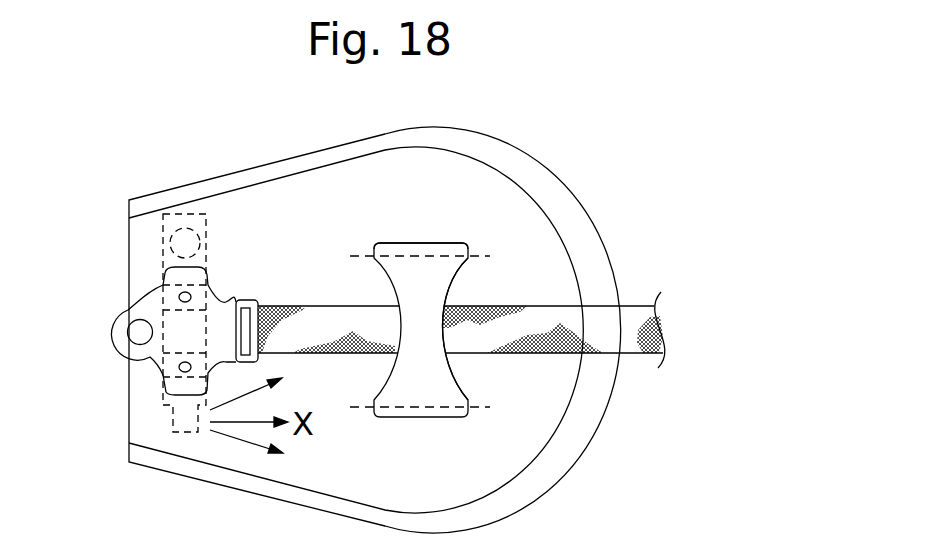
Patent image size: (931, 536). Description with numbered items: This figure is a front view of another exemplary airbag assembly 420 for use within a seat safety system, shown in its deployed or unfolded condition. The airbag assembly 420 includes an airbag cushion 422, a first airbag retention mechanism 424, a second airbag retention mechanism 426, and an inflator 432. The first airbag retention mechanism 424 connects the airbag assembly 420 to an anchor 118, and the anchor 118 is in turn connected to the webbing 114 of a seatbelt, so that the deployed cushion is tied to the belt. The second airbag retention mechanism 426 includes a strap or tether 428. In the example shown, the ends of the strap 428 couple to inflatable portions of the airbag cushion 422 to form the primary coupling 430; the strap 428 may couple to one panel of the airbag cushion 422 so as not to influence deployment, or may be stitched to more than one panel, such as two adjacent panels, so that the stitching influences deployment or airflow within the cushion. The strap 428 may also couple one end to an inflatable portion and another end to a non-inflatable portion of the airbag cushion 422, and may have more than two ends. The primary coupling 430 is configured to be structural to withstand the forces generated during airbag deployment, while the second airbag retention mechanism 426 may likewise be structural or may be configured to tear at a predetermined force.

The webbing 114 is at (655, 337).
The anchor 118 is at (226, 302).
The airbag assembly 420 is at (103, 219).
The airbag cushion 422 is at (483, 448).
The first airbag retention mechanism 424 is at (145, 381).
The second airbag retention mechanism 426 is at (510, 317).
The strap 428 is at (423, 287).
The primary coupling 430 is at (402, 257).
The inflator 432 is at (180, 322).